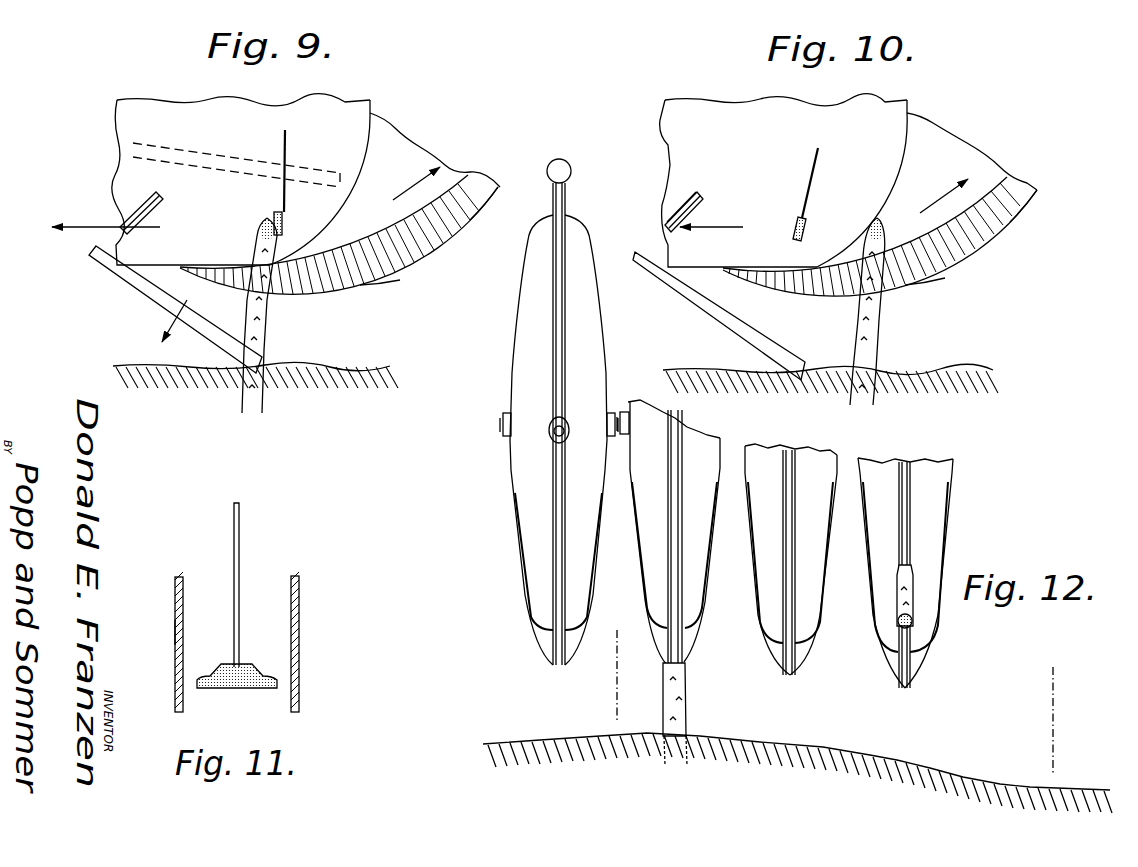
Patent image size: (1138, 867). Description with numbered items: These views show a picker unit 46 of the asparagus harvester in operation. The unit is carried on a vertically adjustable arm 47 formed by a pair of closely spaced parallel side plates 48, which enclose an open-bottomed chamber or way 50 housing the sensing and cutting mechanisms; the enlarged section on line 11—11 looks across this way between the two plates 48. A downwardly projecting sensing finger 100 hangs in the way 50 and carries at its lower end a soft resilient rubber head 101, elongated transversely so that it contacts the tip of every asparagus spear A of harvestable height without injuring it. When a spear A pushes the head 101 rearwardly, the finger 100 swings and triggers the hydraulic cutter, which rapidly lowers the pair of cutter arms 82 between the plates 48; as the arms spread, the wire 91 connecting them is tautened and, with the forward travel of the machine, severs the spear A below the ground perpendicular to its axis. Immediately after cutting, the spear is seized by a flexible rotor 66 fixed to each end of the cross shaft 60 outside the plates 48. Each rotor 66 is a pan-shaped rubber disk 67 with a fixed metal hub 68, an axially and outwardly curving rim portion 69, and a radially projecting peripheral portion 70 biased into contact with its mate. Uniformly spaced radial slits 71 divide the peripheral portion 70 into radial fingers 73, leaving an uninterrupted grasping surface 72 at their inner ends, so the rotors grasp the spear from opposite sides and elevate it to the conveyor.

In FIG. 9, the picker unit 46 is at (378, 104).
In FIG. 10, the picker unit 46 is at (914, 104).
In FIG. 9, the vertically adjustable arm 47 is at (359, 166).
In FIG. 10, the vertically adjustable arm 47 is at (901, 156).
In FIG. 11, the vertically adjustable arm 47 is at (173, 632).
In FIG. 9, the side plate 48 is at (343, 99).
In FIG. 10, the side plate 48 is at (866, 99).
In FIG. 11, the side plate 48 is at (175, 597).
In FIG. 9, the chamber or way 50 is at (260, 126).
In FIG. 10, the chamber or way 50 is at (797, 126).
In FIG. 12, the cross shaft 60 is at (501, 423).
In FIG. 9, the flexible spear grasping and elevating rotor 66 is at (416, 271).
In FIG. 10, the flexible spear grasping and elevating rotor 66 is at (963, 270).
In FIG. 12, the flexible spear grasping and elevating rotor 66 is at (526, 629).
In FIG. 9, the rubber disk 67 is at (420, 147).
In FIG. 10, the rubber disk 67 is at (968, 143).
In FIG. 12, the rubber disk 67 is at (514, 336).
In FIG. 12, the fixed metal hub 68 is at (505, 412).
In FIG. 12, the curving rim portion 69 is at (548, 220).
In FIG. 12, the peripheral portion 70 is at (559, 168).
In FIG. 9, the radial slit 71 is at (463, 228).
In FIG. 10, the radial slit 71 is at (1010, 222).
In FIG. 9, the grasping surface 72 is at (394, 233).
In FIG. 10, the grasping surface 72 is at (982, 195).
In FIG. 9, the radial finger 73 is at (381, 280).
In FIG. 10, the radial finger 73 is at (930, 282).
In FIG. 9, the cutter arm 82 is at (138, 290).
In FIG. 10, the cutter arm 82 is at (718, 314).
In FIG. 9, the wire 91 is at (259, 388).
In FIG. 10, the wire 91 is at (804, 381).
In FIG. 12, the wire 91 is at (797, 773).
In FIG. 9, the sensing finger 100 is at (287, 140).
In FIG. 10, the sensing finger 100 is at (814, 162).
In FIG. 11, the sensing finger 100 is at (241, 540).
In FIG. 9, the head 101 is at (282, 230).
In FIG. 10, the head 101 is at (790, 231).
In FIG. 11, the head 101 is at (250, 670).
In FIG. 9, the asparagus spear A is at (247, 303).
In FIG. 10, the asparagus spear A is at (872, 314).
In FIG. 12, the asparagus spear A is at (553, 433).
In FIG. 9, the section line 11— 11 is at (268, 203).